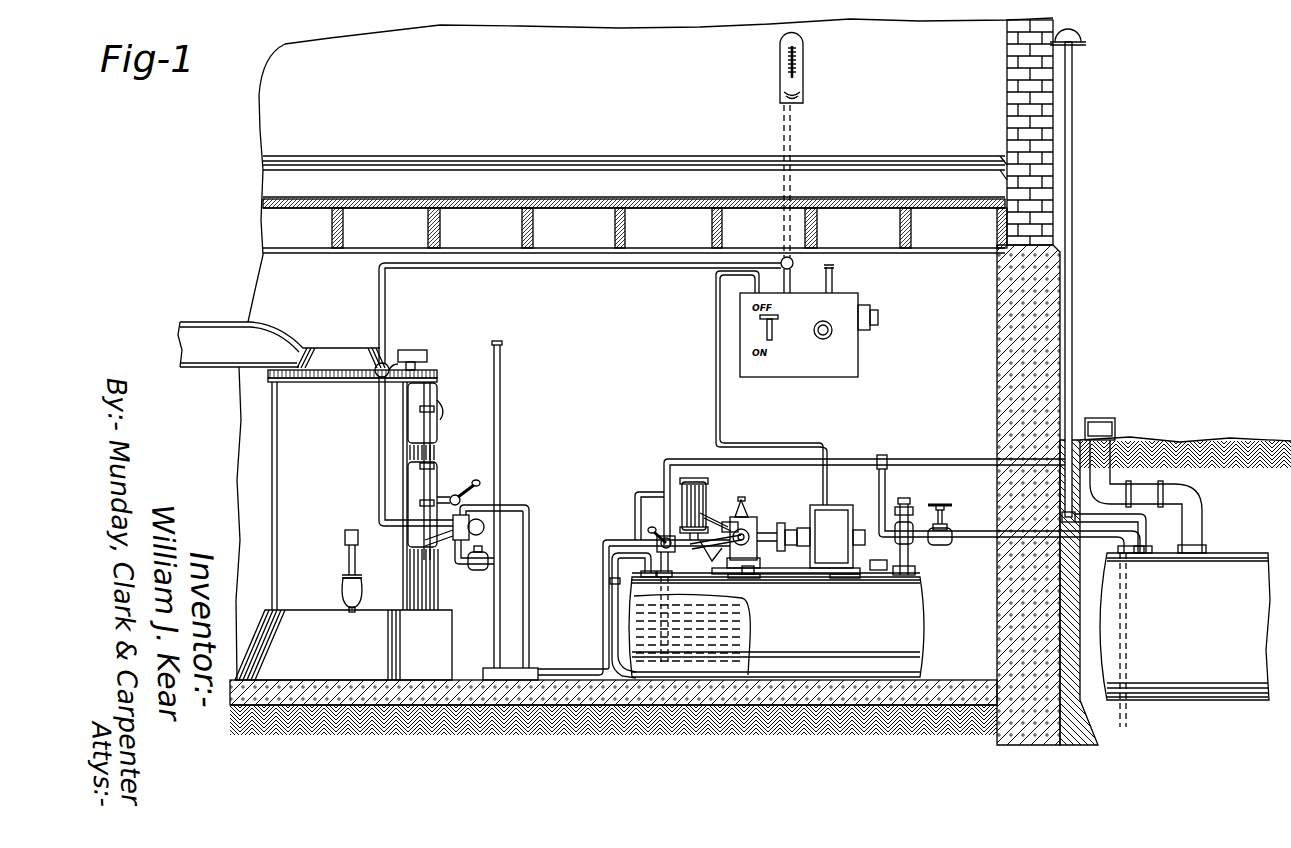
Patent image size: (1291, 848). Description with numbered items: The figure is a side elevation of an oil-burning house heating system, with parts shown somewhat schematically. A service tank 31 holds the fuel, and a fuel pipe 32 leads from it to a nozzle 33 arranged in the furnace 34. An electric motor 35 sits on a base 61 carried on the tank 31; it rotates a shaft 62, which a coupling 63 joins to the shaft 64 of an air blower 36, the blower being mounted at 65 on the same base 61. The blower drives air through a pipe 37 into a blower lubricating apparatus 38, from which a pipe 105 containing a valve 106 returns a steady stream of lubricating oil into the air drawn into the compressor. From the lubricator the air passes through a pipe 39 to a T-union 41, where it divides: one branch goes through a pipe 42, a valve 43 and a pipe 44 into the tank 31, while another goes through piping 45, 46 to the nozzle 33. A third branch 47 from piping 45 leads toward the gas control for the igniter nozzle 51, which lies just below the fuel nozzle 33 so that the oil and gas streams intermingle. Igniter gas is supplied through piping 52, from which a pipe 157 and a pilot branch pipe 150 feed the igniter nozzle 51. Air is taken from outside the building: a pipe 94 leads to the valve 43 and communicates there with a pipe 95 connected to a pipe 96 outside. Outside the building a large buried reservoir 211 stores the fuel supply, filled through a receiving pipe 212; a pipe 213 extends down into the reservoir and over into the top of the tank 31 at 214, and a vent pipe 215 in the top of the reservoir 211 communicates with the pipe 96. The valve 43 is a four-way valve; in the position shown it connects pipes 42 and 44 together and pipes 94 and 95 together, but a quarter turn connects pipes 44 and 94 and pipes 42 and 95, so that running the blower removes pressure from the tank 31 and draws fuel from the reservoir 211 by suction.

The service tank 31 is at (776, 625).
The fuel pipe 32 is at (618, 700).
The nozzle 33 is at (440, 497).
The furnace 34 is at (360, 413).
The electric motor 35 is at (838, 520).
The air blower 36 is at (758, 525).
The pipe 37 is at (725, 526).
The blower lubricating apparatus 38 is at (686, 500).
The pipe 39 is at (635, 508).
The T-union 41 is at (620, 541).
The pipe 42 is at (650, 560).
The valve 43 is at (640, 560).
The pipe 44 is at (672, 565).
The piping 45 is at (602, 560).
The piping 46 is at (470, 569).
The third branch 47 is at (495, 592).
The igniter nozzle 51 is at (430, 522).
The piping 52 is at (499, 402).
The base 61 is at (795, 568).
The shaft 62 is at (802, 528).
The coupling 63 is at (785, 525).
The shaft 64 is at (768, 548).
The mounting 65 is at (750, 574).
The pipe 94 is at (744, 503).
The pipe 95 is at (940, 462).
The pipe 96 is at (1072, 407).
The pipe 105 is at (733, 520).
The valve 106 is at (715, 524).
The pilot branch pipe 150 is at (428, 545).
The pipe 157 is at (462, 520).
The reservoir 211 is at (1226, 688).
The receiving pipe 212 is at (1195, 534).
The pipe 213 is at (1128, 650).
The tank top connection 214 is at (910, 560).
The vent pipe 215 is at (1157, 532).